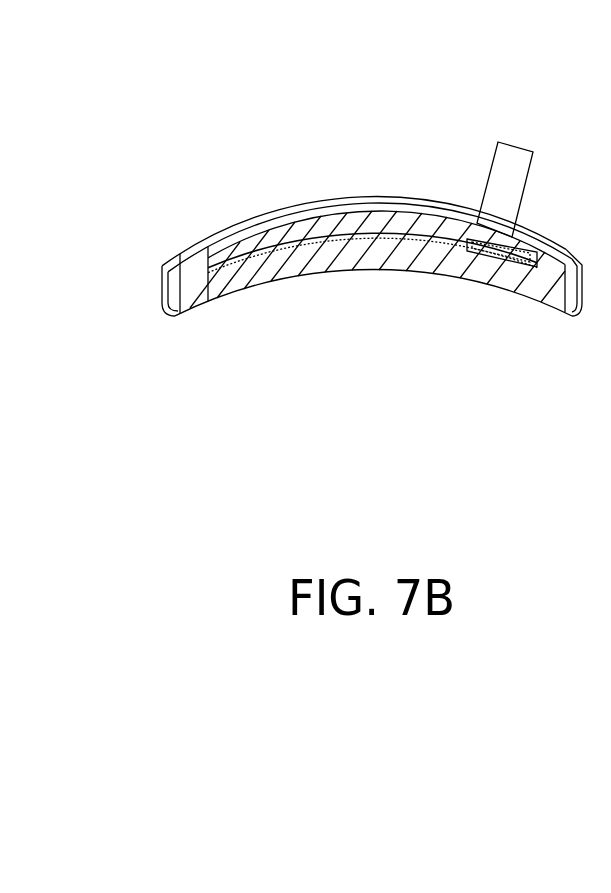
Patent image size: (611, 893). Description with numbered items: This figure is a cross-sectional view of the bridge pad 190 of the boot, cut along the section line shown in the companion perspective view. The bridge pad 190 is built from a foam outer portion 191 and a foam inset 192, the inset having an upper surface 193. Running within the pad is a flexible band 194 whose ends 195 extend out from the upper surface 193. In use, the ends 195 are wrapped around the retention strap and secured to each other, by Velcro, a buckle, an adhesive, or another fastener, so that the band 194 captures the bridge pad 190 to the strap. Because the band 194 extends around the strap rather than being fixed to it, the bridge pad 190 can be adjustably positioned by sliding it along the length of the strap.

The bridge pad 190 is at (196, 84).
The foam outer portion 191 is at (192, 278).
The foam inset 192 is at (222, 253).
The upper surface 193 is at (255, 227).
The flexible band 194 is at (470, 243).
The ends 195 is at (497, 185).